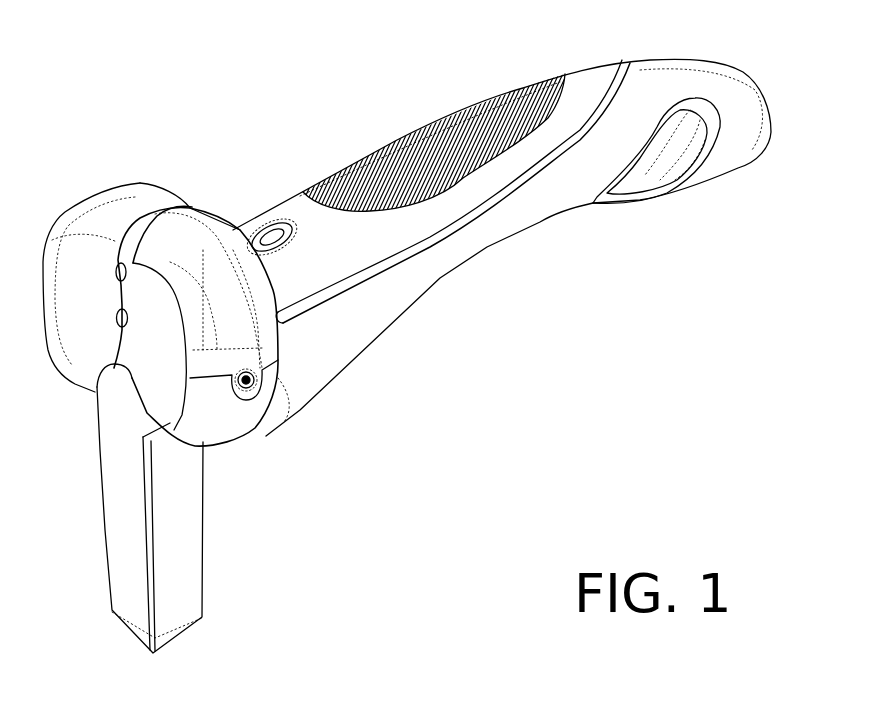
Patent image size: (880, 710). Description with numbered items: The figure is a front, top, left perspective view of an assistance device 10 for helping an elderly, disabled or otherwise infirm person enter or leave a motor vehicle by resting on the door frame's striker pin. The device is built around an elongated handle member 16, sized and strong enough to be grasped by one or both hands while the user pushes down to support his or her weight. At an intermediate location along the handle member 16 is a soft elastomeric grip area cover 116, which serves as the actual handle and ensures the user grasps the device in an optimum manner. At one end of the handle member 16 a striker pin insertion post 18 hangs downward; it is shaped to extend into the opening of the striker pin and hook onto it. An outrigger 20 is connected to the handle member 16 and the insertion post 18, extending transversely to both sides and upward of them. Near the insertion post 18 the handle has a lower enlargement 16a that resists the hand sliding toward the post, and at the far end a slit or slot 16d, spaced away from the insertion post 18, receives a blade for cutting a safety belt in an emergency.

The assistance device 10 is at (477, 298).
The handle member 16 is at (557, 203).
The lower enlargement 16a is at (307, 392).
The slit or slot 16d is at (657, 160).
The striker pin insertion post 18 is at (198, 492).
The outrigger 20 is at (190, 212).
The soft elastomeric grip area cover 116 is at (383, 157).